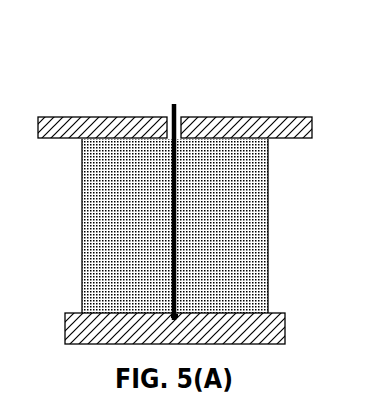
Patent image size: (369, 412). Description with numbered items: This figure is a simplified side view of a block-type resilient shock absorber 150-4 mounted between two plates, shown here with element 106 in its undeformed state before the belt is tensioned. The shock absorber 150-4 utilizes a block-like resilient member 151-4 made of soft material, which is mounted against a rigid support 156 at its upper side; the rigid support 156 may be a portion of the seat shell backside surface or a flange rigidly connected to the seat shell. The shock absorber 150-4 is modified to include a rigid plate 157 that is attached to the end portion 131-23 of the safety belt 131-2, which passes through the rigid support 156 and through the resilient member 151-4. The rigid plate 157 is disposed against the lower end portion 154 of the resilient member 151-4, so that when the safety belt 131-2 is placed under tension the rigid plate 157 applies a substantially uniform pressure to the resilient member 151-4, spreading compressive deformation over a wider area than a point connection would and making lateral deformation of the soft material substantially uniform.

The resilient shock absorber 150-4 is at (48, 80).
The memory cell / resistive memory element 106 is at (246, 84).
The resilient member 151-4 is at (80, 243).
The rigid support 156 is at (298, 142).
The rigid plate 157 is at (63, 325).
The lower end portion 154 is at (101, 317).
The safety belt 131-2 is at (174, 106).
The end portion 131-23 is at (185, 316).